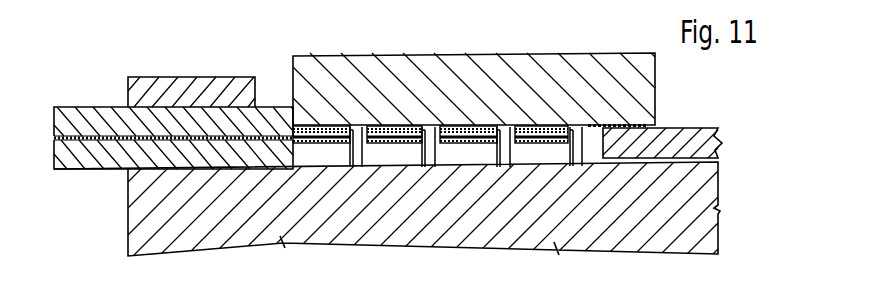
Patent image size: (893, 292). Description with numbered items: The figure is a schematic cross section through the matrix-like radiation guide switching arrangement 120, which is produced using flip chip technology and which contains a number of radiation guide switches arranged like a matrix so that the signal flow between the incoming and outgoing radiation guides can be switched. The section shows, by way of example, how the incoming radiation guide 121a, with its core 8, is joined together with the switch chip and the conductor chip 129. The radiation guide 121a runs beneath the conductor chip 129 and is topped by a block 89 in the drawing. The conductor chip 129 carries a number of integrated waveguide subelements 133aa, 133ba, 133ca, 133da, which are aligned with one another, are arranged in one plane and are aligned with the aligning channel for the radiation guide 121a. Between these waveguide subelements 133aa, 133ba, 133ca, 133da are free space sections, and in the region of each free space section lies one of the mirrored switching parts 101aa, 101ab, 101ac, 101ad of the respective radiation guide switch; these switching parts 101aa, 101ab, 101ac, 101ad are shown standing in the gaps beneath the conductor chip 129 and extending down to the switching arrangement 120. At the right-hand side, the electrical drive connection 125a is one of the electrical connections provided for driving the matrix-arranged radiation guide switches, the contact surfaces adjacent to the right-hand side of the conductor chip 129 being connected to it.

The core 8 is at (122, 144).
The upper layer block 89 is at (193, 98).
The incoming radiation guide 121a is at (170, 130).
The conductor chip 129 is at (442, 93).
The waveguide subelement 133aa is at (322, 118).
The waveguide subelement 133ba is at (392, 118).
The waveguide subelement 133ca is at (471, 118).
The waveguide subelement 133da is at (544, 118).
The switching part 101aa is at (356, 169).
The switching part 101ab is at (428, 168).
The switching part 101ac is at (503, 168).
The switching part 101ad is at (576, 168).
The electrical drive connection 125a is at (707, 153).
The matrix-like radiation guide switching arrangement 120 is at (573, 230).